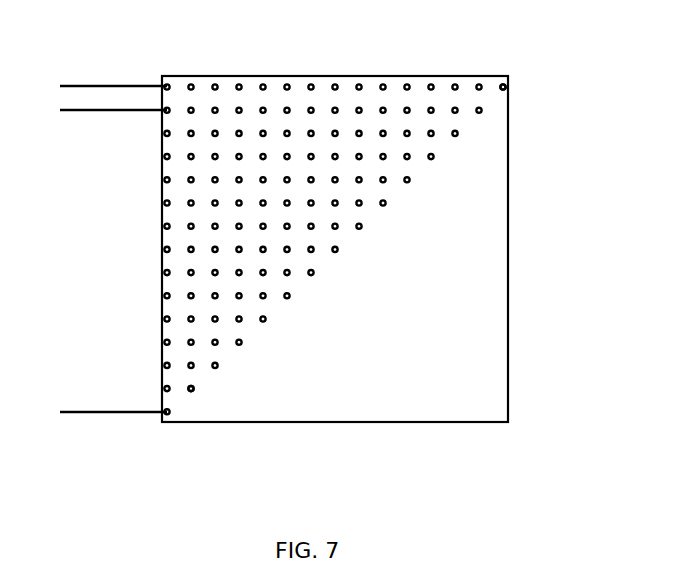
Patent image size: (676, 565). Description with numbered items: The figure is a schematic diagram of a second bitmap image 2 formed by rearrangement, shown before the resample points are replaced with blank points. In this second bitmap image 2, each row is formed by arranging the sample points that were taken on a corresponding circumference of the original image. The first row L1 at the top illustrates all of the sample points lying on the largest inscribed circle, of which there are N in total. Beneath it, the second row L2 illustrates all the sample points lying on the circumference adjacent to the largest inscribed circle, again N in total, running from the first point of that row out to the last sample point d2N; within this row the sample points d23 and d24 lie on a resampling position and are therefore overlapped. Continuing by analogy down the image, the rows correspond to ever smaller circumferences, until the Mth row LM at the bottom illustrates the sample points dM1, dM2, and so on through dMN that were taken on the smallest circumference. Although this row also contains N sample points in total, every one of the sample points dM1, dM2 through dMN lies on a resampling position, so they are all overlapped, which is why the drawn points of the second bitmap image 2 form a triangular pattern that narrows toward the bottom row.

The second bitmap image 2 is at (489, 391).
The first row L1 is at (92, 81).
The second row L2 is at (92, 105).
The Mth row LM is at (94, 412).
The sample point d23 is at (215, 108).
The sample point d24 is at (223, 66).
The sample point d2N is at (478, 108).
The sample point dM1 is at (168, 416).
The sample point dM2 is at (253, 445).
The sample point dMN is at (445, 294).